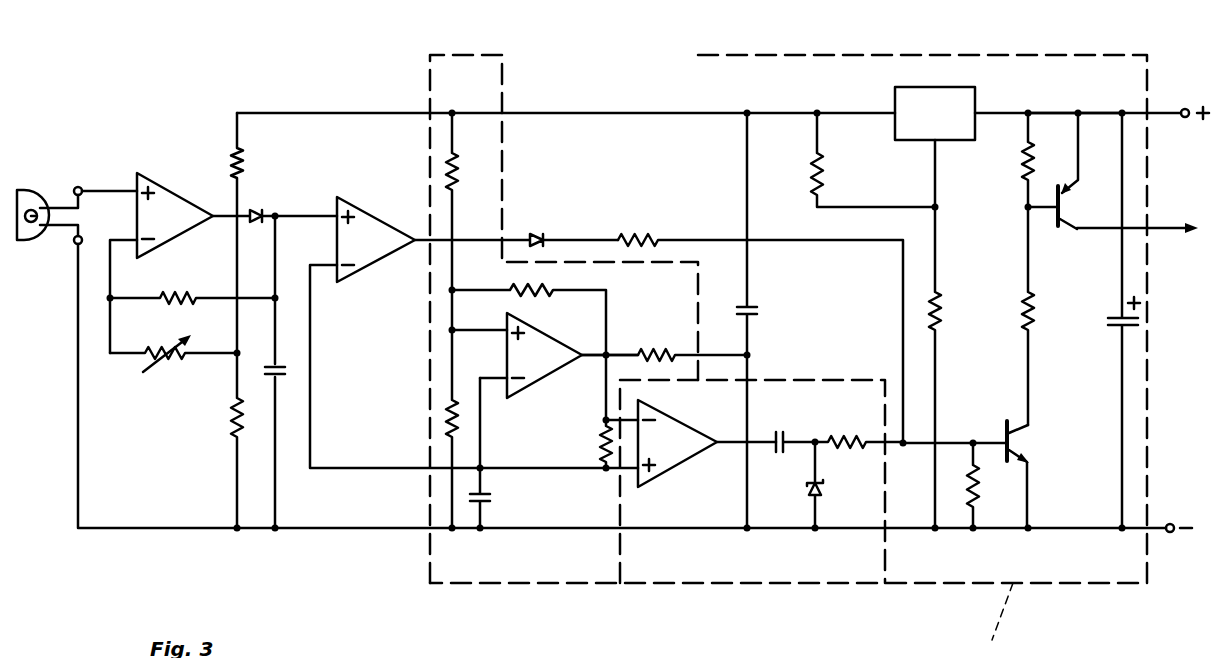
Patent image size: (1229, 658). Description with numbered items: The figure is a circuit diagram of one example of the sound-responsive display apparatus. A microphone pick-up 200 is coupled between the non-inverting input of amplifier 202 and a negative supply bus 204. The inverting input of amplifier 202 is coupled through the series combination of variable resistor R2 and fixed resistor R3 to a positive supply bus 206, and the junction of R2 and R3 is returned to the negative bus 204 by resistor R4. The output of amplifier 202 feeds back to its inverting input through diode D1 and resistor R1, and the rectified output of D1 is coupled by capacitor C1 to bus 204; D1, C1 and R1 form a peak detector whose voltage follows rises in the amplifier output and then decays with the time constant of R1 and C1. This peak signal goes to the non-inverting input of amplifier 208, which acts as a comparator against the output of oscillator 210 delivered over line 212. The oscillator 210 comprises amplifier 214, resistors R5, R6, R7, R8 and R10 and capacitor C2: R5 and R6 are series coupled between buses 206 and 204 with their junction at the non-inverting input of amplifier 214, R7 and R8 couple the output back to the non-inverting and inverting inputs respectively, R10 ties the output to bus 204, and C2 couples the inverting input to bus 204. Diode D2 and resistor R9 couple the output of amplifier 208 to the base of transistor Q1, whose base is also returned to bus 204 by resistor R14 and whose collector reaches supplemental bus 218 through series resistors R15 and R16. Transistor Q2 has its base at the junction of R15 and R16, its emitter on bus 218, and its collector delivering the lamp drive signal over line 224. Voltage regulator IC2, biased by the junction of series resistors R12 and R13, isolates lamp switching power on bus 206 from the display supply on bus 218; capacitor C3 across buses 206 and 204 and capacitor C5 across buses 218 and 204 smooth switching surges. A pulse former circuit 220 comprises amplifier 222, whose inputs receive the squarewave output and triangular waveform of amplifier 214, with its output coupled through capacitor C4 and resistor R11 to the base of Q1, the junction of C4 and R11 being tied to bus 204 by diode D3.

The microphone pick-up 200 is at (22, 190).
The amplifier 202 is at (162, 188).
The negative supply bus 204 is at (78, 482).
The positive supply bus 206 is at (310, 113).
The amplifier 208 is at (356, 209).
The oscillator 210 is at (537, 583).
The line 212 is at (333, 471).
The amplifier 214 is at (539, 380).
The supplemental bus 218 is at (1052, 113).
The pulse former circuit 220 is at (752, 583).
The amplifier 222 is at (682, 463).
The line 224 is at (1160, 229).
The resistor R1 is at (171, 297).
The variable resistor R2 is at (169, 360).
The fixed resistor R3 is at (246, 173).
The resistor R4 is at (231, 425).
The resistor R5 is at (460, 178).
The resistor R6 is at (447, 409).
The resistor R7 is at (539, 294).
The resistor R8 is at (602, 452).
The resistor R9 is at (642, 237).
The resistor R10 is at (644, 352).
The resistor R11 is at (851, 450).
The resistor R12 is at (824, 172).
The resistor R13 is at (941, 322).
The resistor R14 is at (978, 482).
The resistor R15 is at (1022, 152).
The resistor R16 is at (1034, 322).
The capacitor C1 is at (282, 366).
The capacitor C2 is at (486, 501).
The capacitor C3 is at (757, 306).
The capacitor C4 is at (786, 438).
The capacitor C5 is at (1118, 326).
The diode D1 is at (266, 213).
The diode D2 is at (547, 236).
The diode D3 is at (808, 488).
The transistor Q1 is at (1013, 443).
The transistor Q2 is at (1067, 210).
The voltage regulator IC2 is at (935, 147).